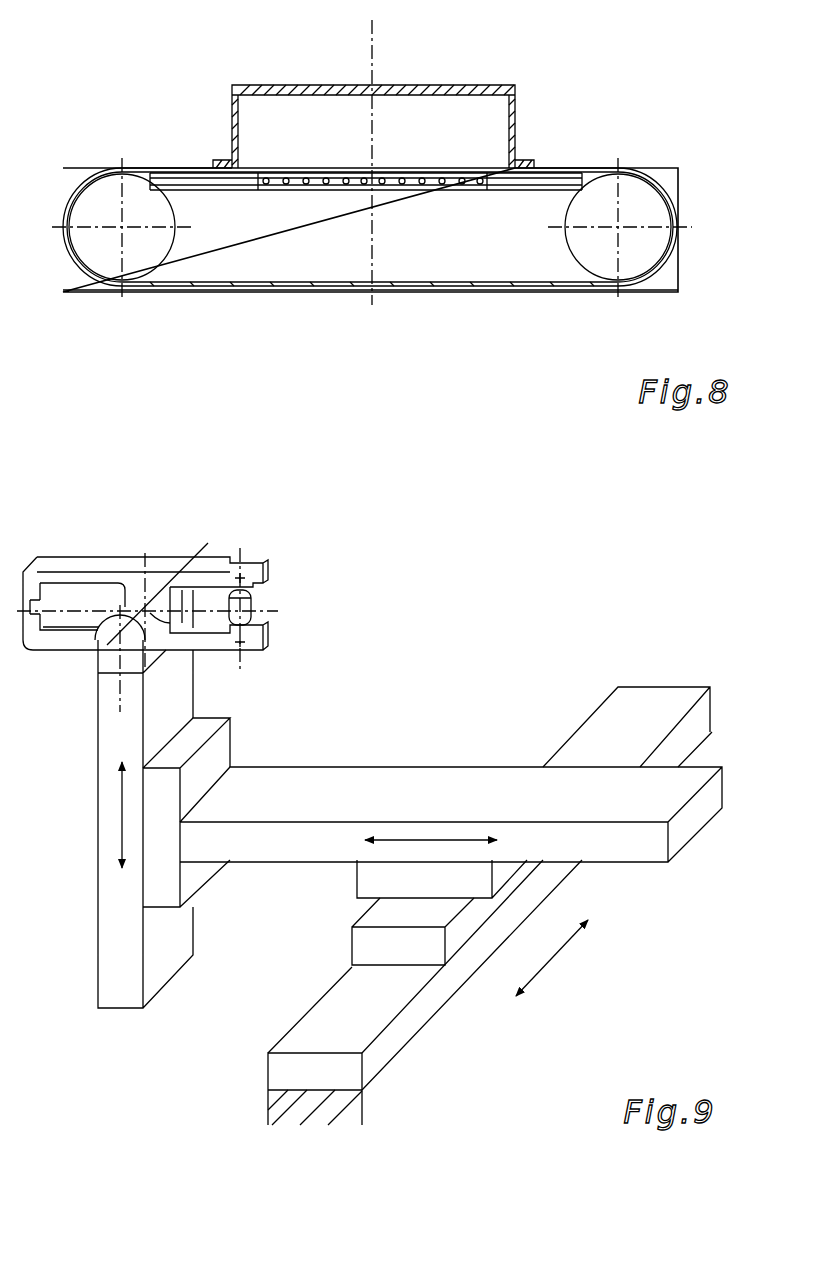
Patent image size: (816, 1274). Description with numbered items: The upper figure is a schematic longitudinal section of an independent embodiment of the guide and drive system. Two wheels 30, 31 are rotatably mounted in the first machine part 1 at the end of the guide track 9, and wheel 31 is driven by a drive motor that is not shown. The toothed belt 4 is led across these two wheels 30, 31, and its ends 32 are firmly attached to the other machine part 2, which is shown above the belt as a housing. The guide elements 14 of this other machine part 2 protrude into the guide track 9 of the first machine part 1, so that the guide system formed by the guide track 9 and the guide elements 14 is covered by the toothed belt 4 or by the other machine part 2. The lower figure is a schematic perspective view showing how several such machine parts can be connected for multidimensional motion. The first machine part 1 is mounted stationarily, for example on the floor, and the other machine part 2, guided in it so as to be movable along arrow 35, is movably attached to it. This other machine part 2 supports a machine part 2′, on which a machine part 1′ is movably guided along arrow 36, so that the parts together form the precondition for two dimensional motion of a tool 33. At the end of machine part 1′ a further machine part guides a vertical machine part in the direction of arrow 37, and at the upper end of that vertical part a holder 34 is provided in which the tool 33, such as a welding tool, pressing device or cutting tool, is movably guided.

In FIG. 8, the first machine part 1 is at (250, 298).
In FIG. 9, the first machine part 1 is at (415, 1028).
In FIG. 9, the machine part 1′ is at (642, 845).
In FIG. 8, the other machine part 2 is at (423, 88).
In FIG. 9, the other machine part 2 is at (380, 952).
In FIG. 9, the machine part 2′ is at (377, 880).
In FIG. 8, the toothed belt 4 is at (140, 165).
In FIG. 8, the guide track 9 is at (185, 178).
In FIG. 8, the guide elements 14 is at (322, 190).
In FIG. 8, the wheel 30 is at (110, 270).
In FIG. 8, the wheel 31 is at (655, 257).
In FIG. 8, the belt ends 32 is at (522, 160).
In FIG. 9, the tool 33 is at (75, 560).
In FIG. 9, the holder 34 is at (106, 668).
In FIG. 9, the arrow 35 is at (548, 963).
In FIG. 9, the arrow 36 is at (405, 836).
In FIG. 9, the arrow 37 is at (118, 800).